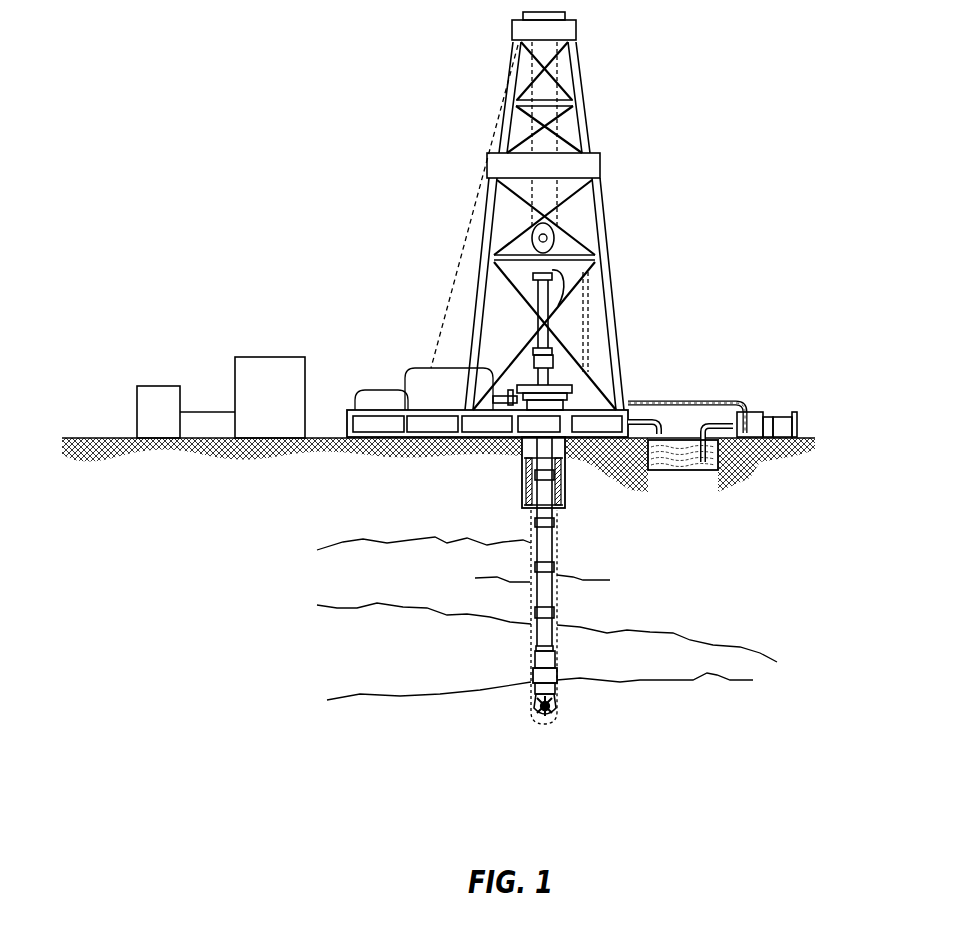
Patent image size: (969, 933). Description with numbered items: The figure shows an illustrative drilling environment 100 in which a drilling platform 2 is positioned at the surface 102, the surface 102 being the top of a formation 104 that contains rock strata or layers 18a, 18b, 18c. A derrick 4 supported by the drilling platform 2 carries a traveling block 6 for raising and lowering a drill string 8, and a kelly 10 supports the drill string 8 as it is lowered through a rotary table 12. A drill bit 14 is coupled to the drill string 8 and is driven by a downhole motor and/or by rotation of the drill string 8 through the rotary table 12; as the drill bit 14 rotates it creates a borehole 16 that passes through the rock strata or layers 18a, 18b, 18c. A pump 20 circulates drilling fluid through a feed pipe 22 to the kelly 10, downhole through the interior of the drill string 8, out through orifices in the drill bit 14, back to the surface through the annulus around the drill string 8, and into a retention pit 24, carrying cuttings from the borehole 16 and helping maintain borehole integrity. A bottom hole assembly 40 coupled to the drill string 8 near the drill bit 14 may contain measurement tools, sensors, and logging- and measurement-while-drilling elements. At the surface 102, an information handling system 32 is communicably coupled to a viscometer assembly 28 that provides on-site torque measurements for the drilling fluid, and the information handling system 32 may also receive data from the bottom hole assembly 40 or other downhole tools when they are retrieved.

The drilling environment 100 is at (748, 35).
The drilling platform 2 is at (347, 428).
The derrick 4 is at (574, 97).
The traveling block 6 is at (552, 238).
The drill string 8 is at (544, 547).
The kelly 10 is at (543, 322).
The rotary table 12 is at (570, 390).
The drill bit 14 is at (546, 716).
The borehole 16 is at (557, 572).
The rock stratum 18a is at (366, 646).
The rock stratum 18b is at (366, 582).
The rock stratum 18c is at (718, 522).
The pump 20 is at (752, 412).
The feed pipe 22 is at (676, 399).
The retention pit 24 is at (650, 468).
The viscometer assembly 28 is at (173, 424).
The information handling system 32 is at (282, 411).
The bottom hole assembly 40 is at (545, 676).
The surface 102 is at (118, 437).
The formation 104 is at (283, 452).